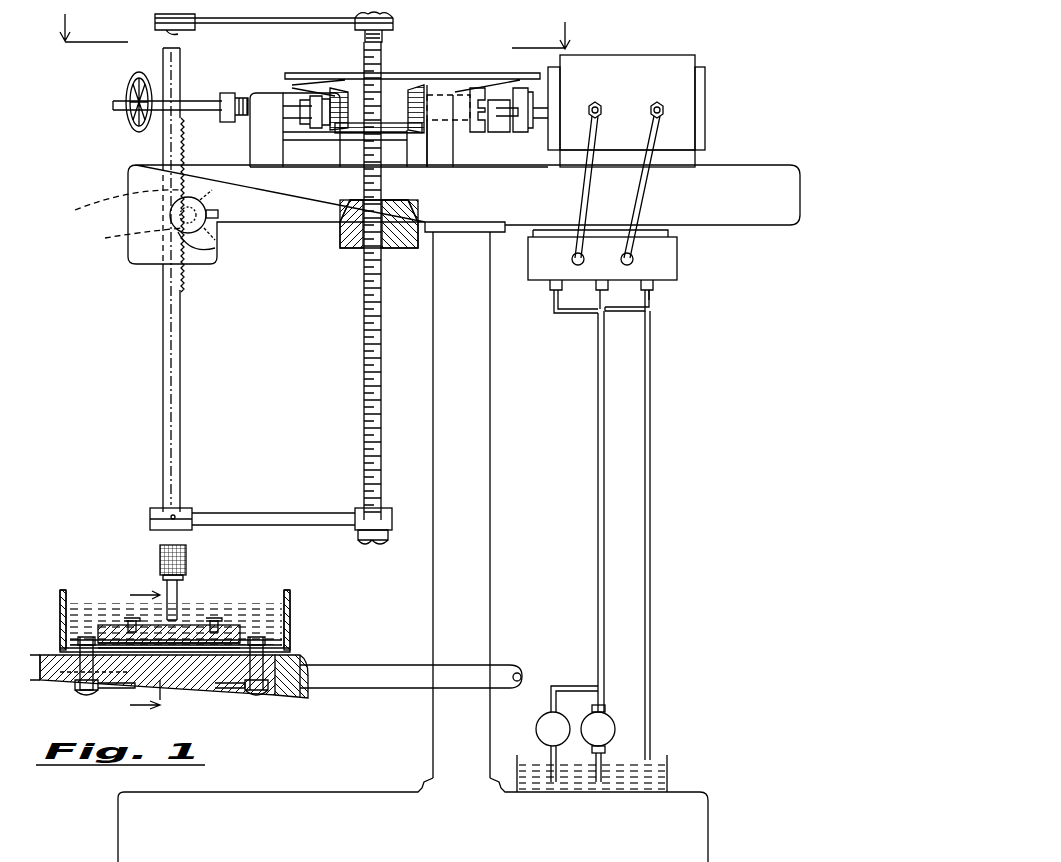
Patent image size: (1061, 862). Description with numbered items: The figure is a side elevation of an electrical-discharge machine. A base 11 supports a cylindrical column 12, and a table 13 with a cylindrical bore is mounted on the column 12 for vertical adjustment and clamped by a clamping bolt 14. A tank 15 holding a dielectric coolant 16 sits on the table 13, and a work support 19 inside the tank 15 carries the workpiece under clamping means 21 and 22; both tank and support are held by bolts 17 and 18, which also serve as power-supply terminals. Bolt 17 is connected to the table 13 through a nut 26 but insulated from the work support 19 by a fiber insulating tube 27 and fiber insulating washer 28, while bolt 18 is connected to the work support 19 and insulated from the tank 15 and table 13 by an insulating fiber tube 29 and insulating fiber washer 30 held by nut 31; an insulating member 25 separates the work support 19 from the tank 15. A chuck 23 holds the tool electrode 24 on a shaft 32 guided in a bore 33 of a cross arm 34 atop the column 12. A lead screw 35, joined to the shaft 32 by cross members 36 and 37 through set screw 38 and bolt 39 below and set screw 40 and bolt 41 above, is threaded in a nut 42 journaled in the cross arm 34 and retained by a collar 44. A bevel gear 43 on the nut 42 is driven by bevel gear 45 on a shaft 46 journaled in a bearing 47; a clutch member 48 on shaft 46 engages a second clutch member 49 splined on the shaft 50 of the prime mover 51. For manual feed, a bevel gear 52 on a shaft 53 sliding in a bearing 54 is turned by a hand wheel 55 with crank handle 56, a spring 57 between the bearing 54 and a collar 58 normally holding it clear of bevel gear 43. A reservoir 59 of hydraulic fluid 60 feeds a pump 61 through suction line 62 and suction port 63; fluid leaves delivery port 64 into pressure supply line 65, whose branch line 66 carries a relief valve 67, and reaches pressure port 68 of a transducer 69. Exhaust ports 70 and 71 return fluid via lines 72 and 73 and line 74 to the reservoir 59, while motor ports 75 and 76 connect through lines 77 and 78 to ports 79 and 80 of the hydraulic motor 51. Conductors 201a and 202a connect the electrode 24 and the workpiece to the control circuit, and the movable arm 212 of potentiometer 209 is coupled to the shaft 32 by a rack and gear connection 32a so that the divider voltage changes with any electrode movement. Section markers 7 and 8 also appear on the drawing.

The section line 7 is at (136, 645).
The section line 8 is at (319, 31).
The base 11 is at (712, 836).
The cylindrical column 12 is at (492, 534).
The table 13 is at (366, 662).
The clamping bolt 14 is at (519, 672).
The tank 15 is at (290, 600).
The dielectric coolant 16 is at (68, 620).
The bolt 17 is at (270, 690).
The bolt 18 is at (40, 678).
The work support 19 is at (190, 640).
The clamping means 21 is at (124, 618).
The clamping means 22 is at (222, 618).
The chuck 23 is at (186, 552).
The tool electrode 24 is at (180, 590).
The insulating member 25 is at (170, 645).
The nut 26 is at (258, 692).
The fiber insulating tube 27 is at (300, 660).
The fiber insulating washer 28 is at (290, 642).
The insulating fiber tube 29 is at (78, 650).
The insulating fiber washer 30 is at (84, 692).
The nut 31 is at (110, 690).
The shaft 32 is at (163, 444).
The rack and gear connection 32a is at (111, 205).
The bore 33 is at (146, 219).
The cross arm member 34 is at (318, 214).
The lead screw 35 is at (364, 413).
The cross member 36 is at (255, 510).
The cross member 37 is at (268, 22).
The set screw 38 is at (178, 516).
The bolt 39 is at (372, 542).
The set screw 40 is at (165, 32).
The bolt 41 is at (410, 24).
The nut 42 is at (392, 240).
The bevel gear 43 is at (335, 138).
The collar 44 is at (348, 240).
The bevel gear 45 is at (416, 88).
The shaft 46 is at (452, 92).
The bearing 47 is at (460, 156).
The clutch member 48 is at (478, 135).
The second clutch member 49 is at (524, 134).
The shaft 50 is at (500, 102).
The prime mover 51 is at (690, 55).
The bevel gear 52 is at (360, 92).
The shaft 53 is at (296, 112).
The bearing 54 is at (270, 130).
The hand wheel 55 is at (128, 132).
The crank handle 56 is at (112, 110).
The spring 57 is at (252, 84).
The collar 58 is at (227, 92).
The reservoir 59 is at (668, 775).
The hydraulic fluid 60 is at (553, 784).
The hydraulic pump 61 is at (614, 722).
The suction line 62 is at (600, 784).
The suction port 63 is at (606, 750).
The delivery port 64 is at (606, 707).
The pressure supply line 65 is at (596, 464).
The branch line 66 is at (566, 684).
The relief valve 67 is at (538, 720).
The pressure port 68 is at (596, 296).
The transducer 69 is at (668, 276).
The exhaust port 70 is at (548, 292).
The exhaust port 71 is at (652, 290).
The line 72 is at (625, 318).
The line 73 is at (640, 299).
The line 74 is at (652, 386).
The motor port 75 is at (572, 259).
The motor port 76 is at (633, 259).
The line 77 is at (585, 194).
The line 78 is at (648, 196).
The port 79 is at (612, 94).
The port 80 is at (659, 97).
The conductor 201a is at (240, 690).
The conductor 202a is at (150, 690).
The potentiometer 209 is at (215, 248).
The movable arm 212 is at (218, 214).